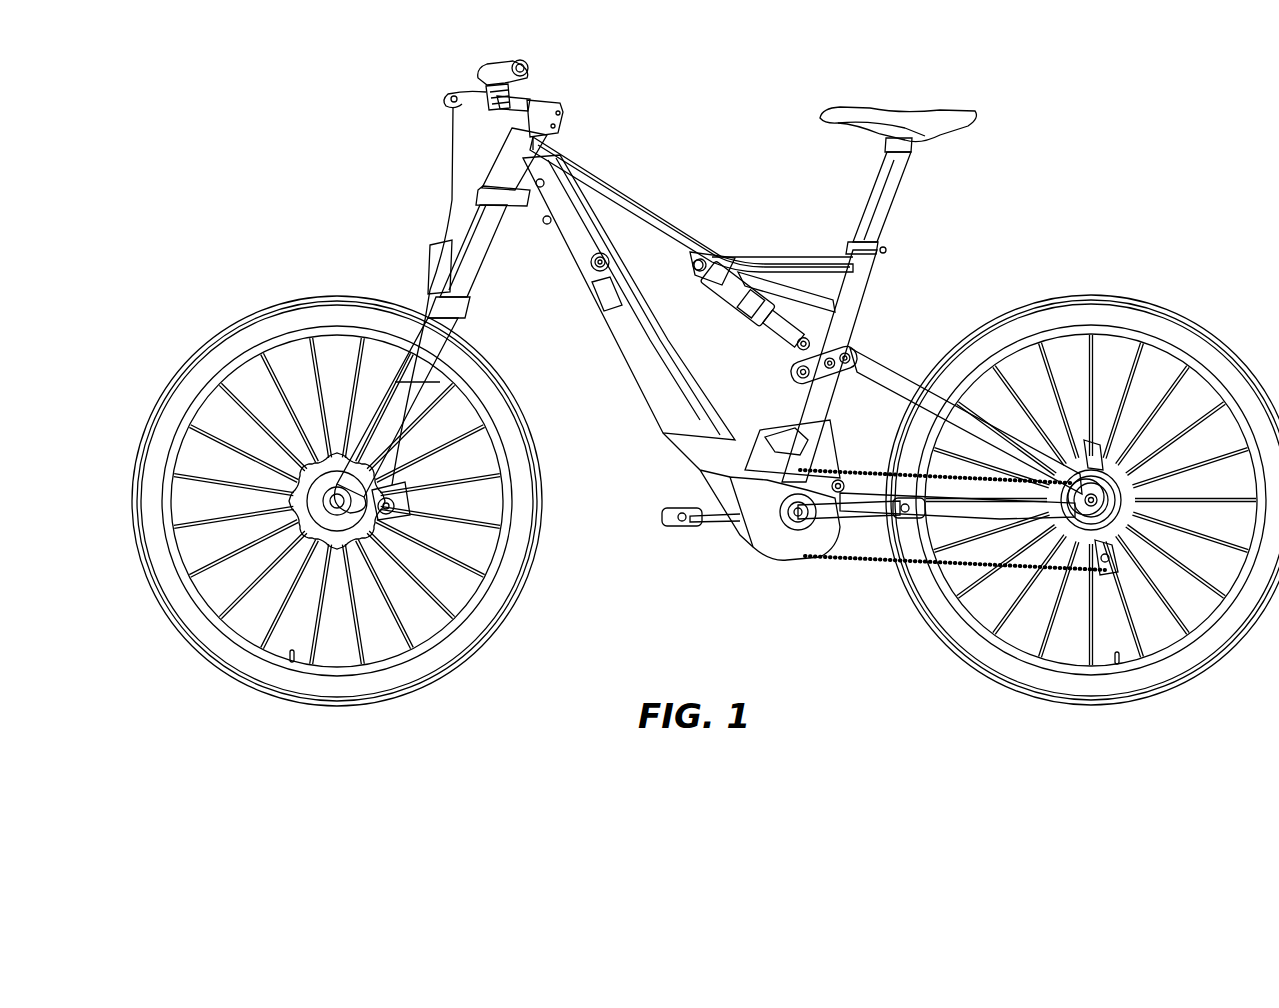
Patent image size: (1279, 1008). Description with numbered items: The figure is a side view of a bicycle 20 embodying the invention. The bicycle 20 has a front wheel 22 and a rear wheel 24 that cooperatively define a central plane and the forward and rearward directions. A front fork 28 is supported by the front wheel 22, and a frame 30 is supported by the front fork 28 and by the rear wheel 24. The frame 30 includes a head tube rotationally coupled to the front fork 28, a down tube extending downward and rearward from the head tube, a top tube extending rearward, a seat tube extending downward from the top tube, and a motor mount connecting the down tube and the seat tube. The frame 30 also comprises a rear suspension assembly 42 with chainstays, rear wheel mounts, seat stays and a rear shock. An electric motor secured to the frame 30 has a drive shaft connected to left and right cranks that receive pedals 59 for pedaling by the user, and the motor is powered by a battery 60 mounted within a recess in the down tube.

The bicycle 20 is at (1081, 112).
The front wheel 22 is at (282, 318).
The rear wheel 24 is at (1142, 318).
The front fork 28 is at (458, 326).
The frame 30 is at (722, 145).
The rear suspension assembly 42 is at (918, 338).
The pedals 59 is at (668, 522).
The battery 60 is at (633, 373).